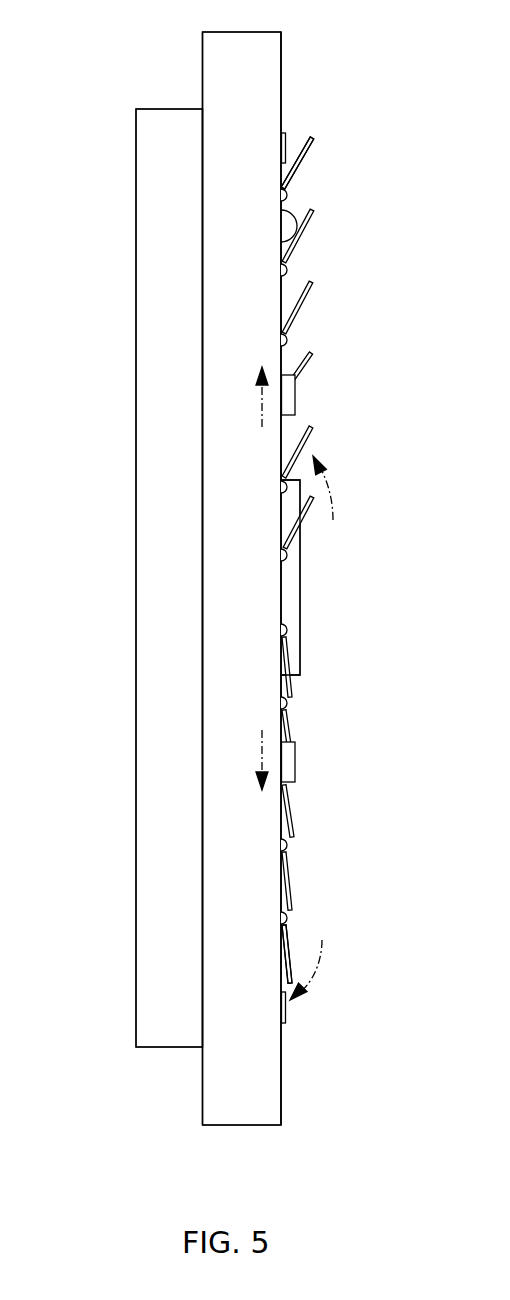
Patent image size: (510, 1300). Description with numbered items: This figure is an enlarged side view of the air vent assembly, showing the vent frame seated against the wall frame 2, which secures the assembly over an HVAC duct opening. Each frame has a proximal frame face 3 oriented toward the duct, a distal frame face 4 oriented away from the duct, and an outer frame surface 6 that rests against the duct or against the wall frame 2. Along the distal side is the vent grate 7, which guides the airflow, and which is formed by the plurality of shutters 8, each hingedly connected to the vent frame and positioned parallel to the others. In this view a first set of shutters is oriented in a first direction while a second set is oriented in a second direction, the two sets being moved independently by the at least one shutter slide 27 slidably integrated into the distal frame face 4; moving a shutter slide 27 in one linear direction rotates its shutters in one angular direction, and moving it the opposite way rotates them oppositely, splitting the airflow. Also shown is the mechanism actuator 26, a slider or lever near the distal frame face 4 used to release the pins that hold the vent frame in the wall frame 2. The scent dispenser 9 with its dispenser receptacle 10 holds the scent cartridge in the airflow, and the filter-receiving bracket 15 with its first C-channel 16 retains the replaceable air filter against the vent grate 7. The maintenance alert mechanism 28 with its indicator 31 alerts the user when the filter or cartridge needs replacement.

The wall frame 2 is at (262, 590).
The proximal frame face 3 is at (191, 50).
The distal frame face 4 is at (320, 37).
The outer frame surface 6 is at (242, 578).
The vent grate 7 is at (308, 293).
The plurality of shutters 8 is at (297, 560).
The scent dispenser 9 is at (322, 551).
The dispenser receptacle 10 is at (297, 597).
The filter-receiving bracket 15 is at (148, 787).
The first C-channel 16 is at (169, 578).
The mechanism actuator 26 is at (285, 136).
The shutter slide 27 is at (290, 397).
The maintenance alert mechanism 28 is at (309, 196).
The indicator 31 is at (282, 228).